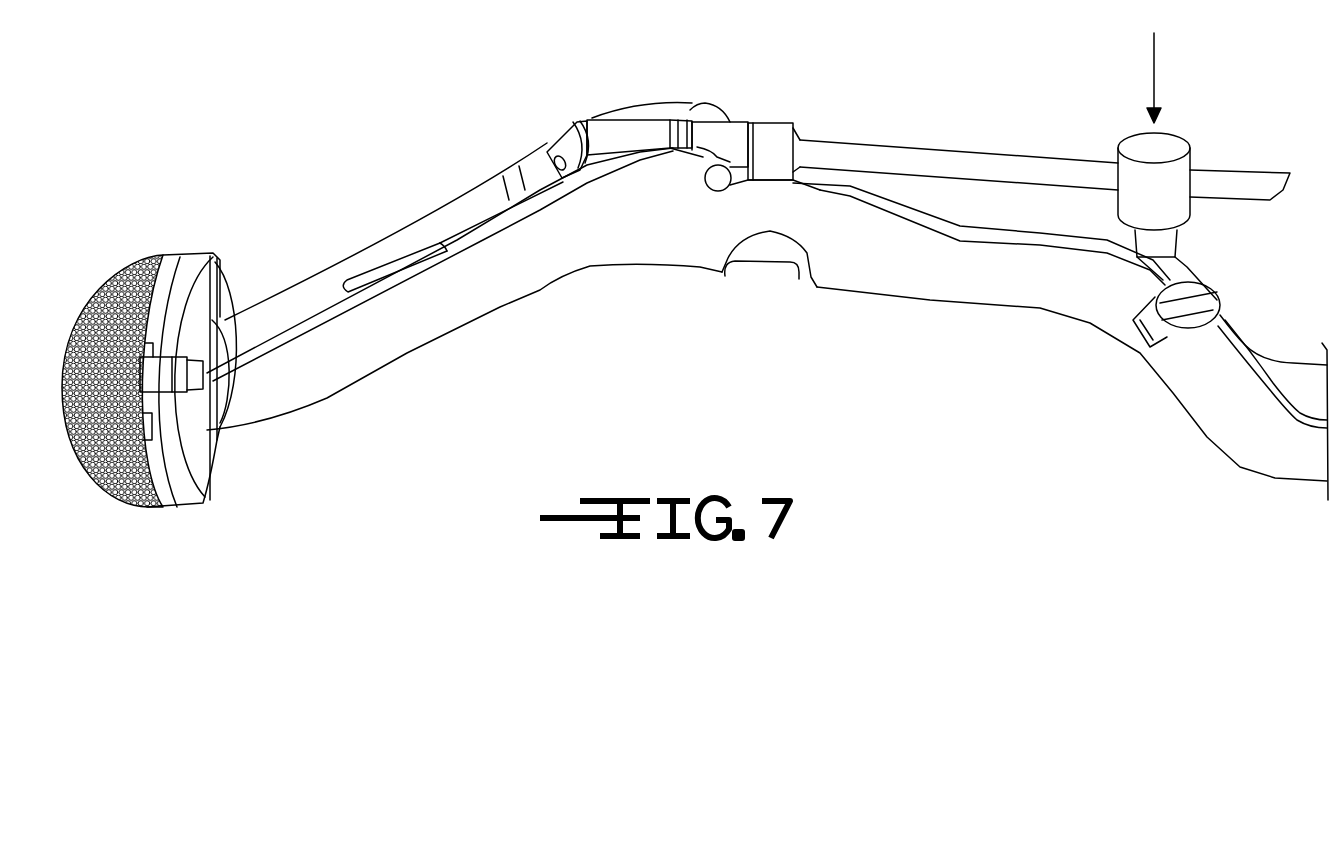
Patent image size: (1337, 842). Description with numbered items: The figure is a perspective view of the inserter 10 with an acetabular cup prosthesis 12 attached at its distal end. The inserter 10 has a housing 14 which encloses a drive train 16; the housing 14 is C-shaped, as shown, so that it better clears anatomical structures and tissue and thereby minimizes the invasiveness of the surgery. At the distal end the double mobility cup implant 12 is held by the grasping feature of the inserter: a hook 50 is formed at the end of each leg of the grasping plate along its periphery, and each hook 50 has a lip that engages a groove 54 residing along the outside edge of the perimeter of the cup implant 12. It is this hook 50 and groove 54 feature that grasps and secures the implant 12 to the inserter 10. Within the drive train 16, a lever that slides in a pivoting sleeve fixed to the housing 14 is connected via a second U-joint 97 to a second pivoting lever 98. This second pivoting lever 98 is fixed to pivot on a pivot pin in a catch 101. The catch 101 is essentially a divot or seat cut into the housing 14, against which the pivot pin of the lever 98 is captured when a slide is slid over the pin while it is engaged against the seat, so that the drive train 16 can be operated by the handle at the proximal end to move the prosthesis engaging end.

The inserter 10 is at (450, 86).
The acetabular cup prosthesis 12 is at (73, 325).
The housing 14 is at (930, 292).
The drive train 16 is at (500, 187).
The hook 50 is at (200, 252).
The groove 54 is at (163, 507).
The second U-joint 97 is at (547, 150).
The second pivoting lever 98 is at (940, 143).
The catch 101 is at (713, 112).